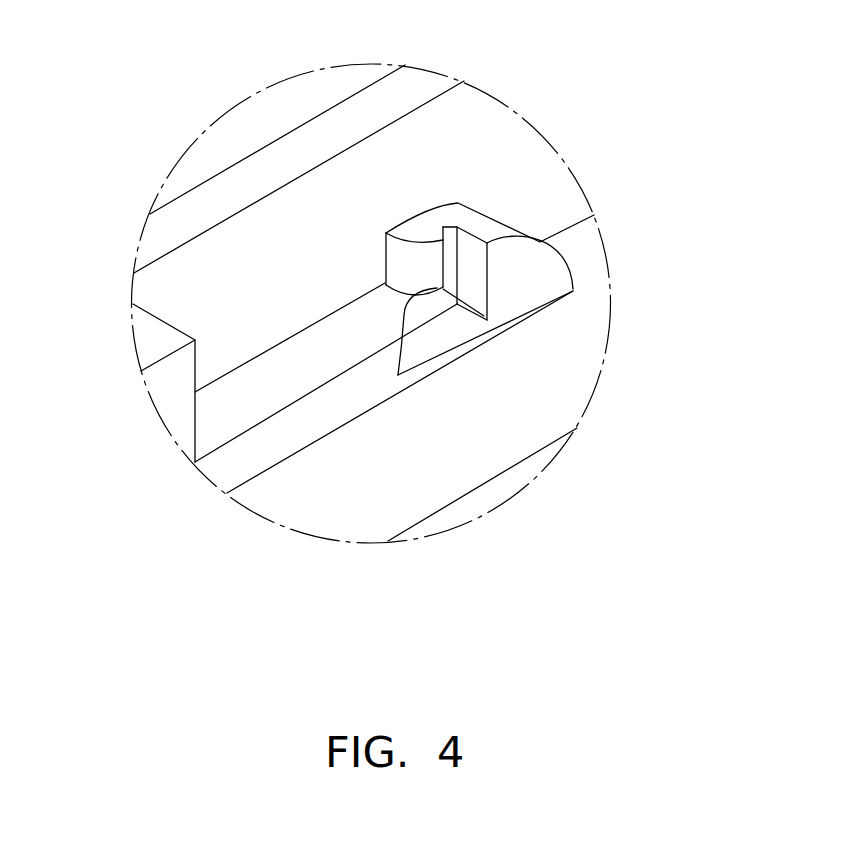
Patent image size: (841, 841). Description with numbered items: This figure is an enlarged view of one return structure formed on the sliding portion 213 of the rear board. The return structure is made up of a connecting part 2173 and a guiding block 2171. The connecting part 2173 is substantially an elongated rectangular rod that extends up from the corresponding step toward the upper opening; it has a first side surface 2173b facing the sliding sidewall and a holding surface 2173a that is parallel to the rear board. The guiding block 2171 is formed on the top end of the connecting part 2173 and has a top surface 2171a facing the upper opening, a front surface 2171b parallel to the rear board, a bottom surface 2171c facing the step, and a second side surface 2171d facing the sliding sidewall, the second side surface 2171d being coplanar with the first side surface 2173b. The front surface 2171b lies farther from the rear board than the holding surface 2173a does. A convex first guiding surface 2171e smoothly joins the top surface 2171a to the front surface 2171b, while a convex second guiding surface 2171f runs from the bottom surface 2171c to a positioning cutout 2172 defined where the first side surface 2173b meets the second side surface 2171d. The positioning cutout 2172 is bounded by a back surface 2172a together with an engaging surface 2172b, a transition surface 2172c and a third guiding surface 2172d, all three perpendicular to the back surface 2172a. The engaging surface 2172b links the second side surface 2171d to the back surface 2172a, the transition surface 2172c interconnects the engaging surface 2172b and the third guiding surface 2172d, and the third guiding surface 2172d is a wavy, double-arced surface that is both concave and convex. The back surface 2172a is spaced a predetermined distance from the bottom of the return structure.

The sliding portion 213 is at (262, 172).
The guiding block 2171 is at (413, 157).
The top surface 2171a is at (567, 256).
The front surface 2171b is at (408, 225).
The bottom surface 2171c is at (392, 258).
The second side surface 2171d is at (540, 293).
The first guiding surface 2171e is at (487, 210).
The second guiding surface 2171f is at (425, 252).
The positioning cutout 2172 is at (438, 340).
The back surface 2172a is at (417, 347).
The engaging surface 2172b is at (473, 272).
The transition surface 2172c is at (487, 312).
The third guiding surface 2172d is at (399, 357).
The connecting part 2173 is at (248, 308).
The holding surface 2173a is at (237, 402).
The first side surface 2173b is at (257, 448).